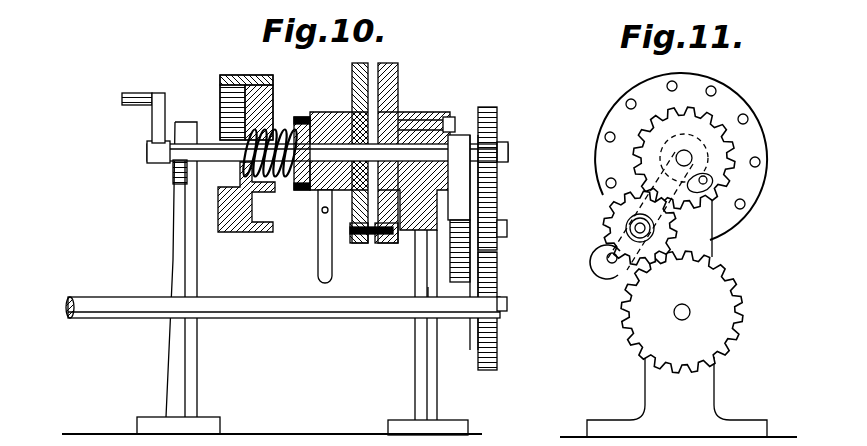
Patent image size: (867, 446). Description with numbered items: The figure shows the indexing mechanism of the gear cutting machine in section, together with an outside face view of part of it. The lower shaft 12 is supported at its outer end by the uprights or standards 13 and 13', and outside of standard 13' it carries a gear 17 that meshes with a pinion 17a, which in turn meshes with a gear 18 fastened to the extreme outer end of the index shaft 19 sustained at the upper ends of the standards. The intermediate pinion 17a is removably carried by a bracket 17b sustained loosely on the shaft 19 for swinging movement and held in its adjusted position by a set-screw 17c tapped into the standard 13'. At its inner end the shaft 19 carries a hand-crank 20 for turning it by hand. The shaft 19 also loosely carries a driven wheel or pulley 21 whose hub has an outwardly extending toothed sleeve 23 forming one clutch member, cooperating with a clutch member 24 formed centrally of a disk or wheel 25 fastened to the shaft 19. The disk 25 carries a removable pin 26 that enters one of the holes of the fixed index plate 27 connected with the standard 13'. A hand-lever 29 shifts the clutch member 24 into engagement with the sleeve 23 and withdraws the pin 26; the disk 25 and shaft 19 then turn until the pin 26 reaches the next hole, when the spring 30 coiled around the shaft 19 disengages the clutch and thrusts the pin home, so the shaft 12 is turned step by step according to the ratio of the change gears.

In FIG. 10, the shaft 12 is at (120, 297).
In FIG. 11, the shaft 12 is at (690, 306).
In FIG. 10, the standard 13 is at (184, 278).
In FIG. 10, the standard 13' is at (414, 332).
In FIG. 11, the standard 13' is at (677, 318).
In FIG. 10, the gear 17 is at (497, 345).
In FIG. 11, the gear 17 is at (686, 320).
In FIG. 10, the pinion 17a is at (497, 208).
In FIG. 11, the pinion 17a is at (604, 222).
In FIG. 10, the bracket 17b is at (457, 267).
In FIG. 11, the bracket 17b is at (593, 266).
In FIG. 11, the set-screw 17c is at (706, 172).
In FIG. 10, the gear 18 is at (488, 107).
In FIG. 11, the gear 18 is at (723, 146).
In FIG. 10, the index shaft 19 is at (148, 154).
In FIG. 11, the index shaft 19 is at (690, 154).
In FIG. 10, the hand-crank 20 is at (148, 93).
In FIG. 10, the driven wheel 21 is at (250, 77).
In FIG. 10, the sleeve 23 is at (276, 120).
In FIG. 10, the clutch member 24 is at (311, 108).
In FIG. 10, the disk or wheel 25 is at (352, 82).
In FIG. 10, the removable pin 26 is at (372, 240).
In FIG. 10, the index plate 27 is at (400, 113).
In FIG. 11, the index plate 27 is at (737, 100).
In FIG. 10, the hand-lever 29 is at (319, 240).
In FIG. 10, the spring 30 is at (233, 177).